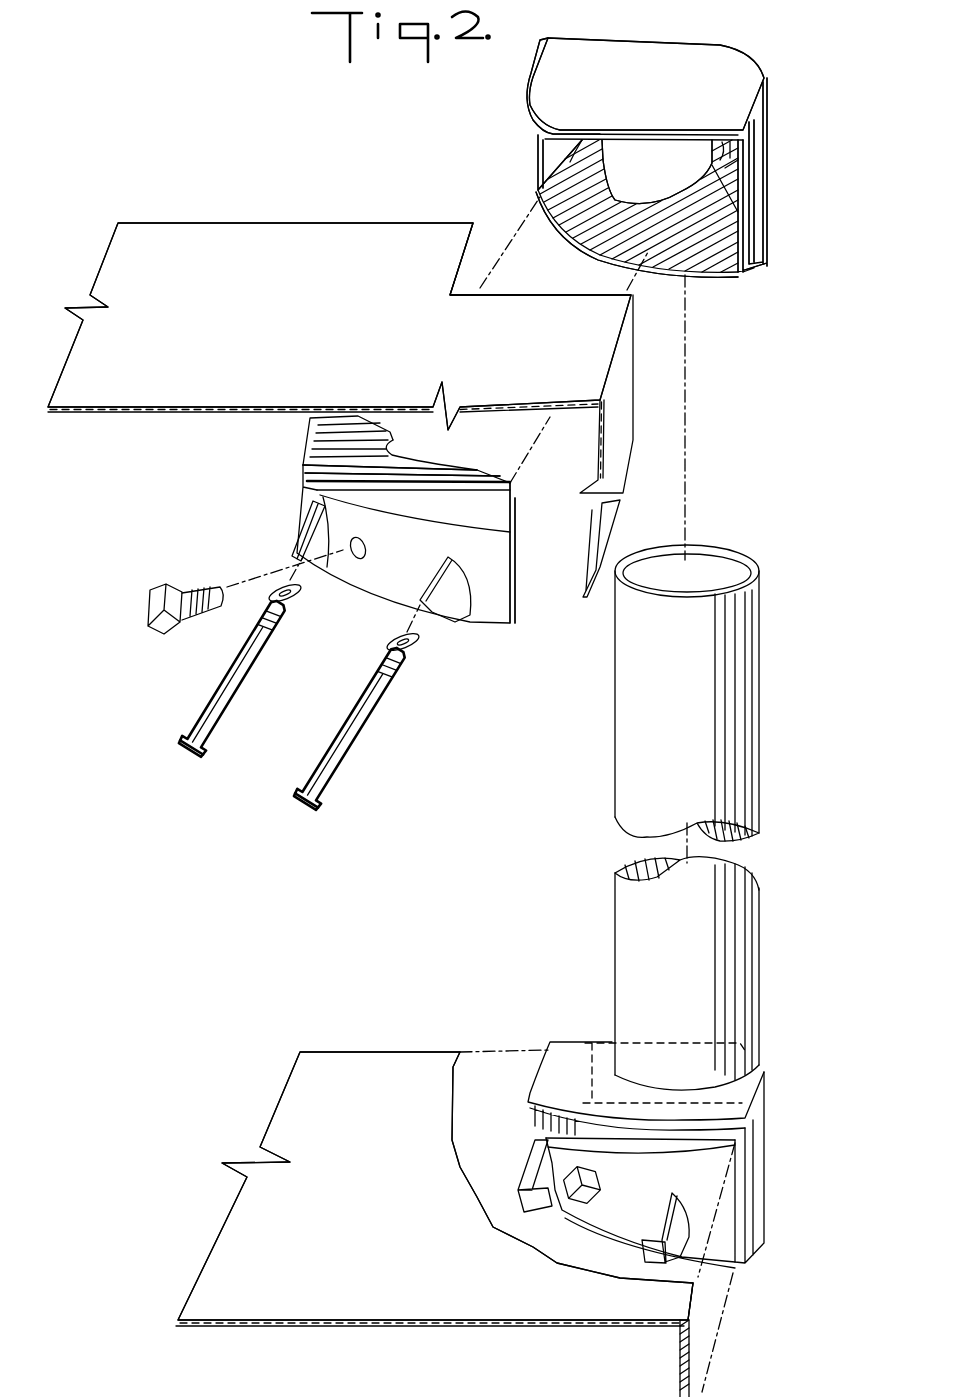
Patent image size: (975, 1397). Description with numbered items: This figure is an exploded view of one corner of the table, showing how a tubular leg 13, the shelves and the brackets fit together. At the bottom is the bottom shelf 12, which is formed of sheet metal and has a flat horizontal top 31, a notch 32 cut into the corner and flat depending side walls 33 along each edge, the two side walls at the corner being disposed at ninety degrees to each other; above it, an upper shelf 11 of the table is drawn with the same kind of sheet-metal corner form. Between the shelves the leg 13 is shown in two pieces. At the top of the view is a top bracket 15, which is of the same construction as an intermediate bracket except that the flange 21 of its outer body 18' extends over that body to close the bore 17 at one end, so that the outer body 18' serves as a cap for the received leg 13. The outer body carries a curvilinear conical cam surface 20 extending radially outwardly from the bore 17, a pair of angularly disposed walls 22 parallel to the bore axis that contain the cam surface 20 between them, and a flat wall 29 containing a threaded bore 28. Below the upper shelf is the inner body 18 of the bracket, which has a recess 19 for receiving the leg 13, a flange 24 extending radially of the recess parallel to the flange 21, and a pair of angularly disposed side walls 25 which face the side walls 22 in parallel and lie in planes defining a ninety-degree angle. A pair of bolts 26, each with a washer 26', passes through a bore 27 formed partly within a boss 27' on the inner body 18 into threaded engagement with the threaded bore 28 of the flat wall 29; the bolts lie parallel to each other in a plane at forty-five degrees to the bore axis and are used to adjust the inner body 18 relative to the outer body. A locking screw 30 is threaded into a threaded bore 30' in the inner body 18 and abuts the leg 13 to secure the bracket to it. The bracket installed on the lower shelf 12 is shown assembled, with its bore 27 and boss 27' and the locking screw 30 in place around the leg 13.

The upper sheet metal assembly 11 is at (248, 206).
The bottom shelf 12 is at (381, 1051).
The tubular leg 13 is at (752, 904).
The top bracket 15 is at (780, 113).
The bore 17 is at (606, 185).
The inner body 18 is at (425, 545).
The outer body 18' is at (646, 65).
The recess 19 is at (398, 446).
The curvilinear conical cam surface 20 is at (706, 252).
The flange 21 is at (548, 92).
The angularly disposed walls 22 is at (545, 150).
The flange 24 is at (310, 461).
The side walls 25 is at (515, 546).
The bolt 26 is at (292, 705).
The washer 26' is at (362, 639).
The bore 27 is at (592, 1201).
The boss 27' is at (374, 580).
The threaded bore 28 is at (734, 148).
The flat wall 29 is at (586, 150).
The locking screw 30 is at (398, 869).
The threaded bore 30' is at (383, 544).
The flat horizontal top 31 is at (82, 355).
The notch 32 is at (469, 244).
The depending side walls 33 is at (630, 381).